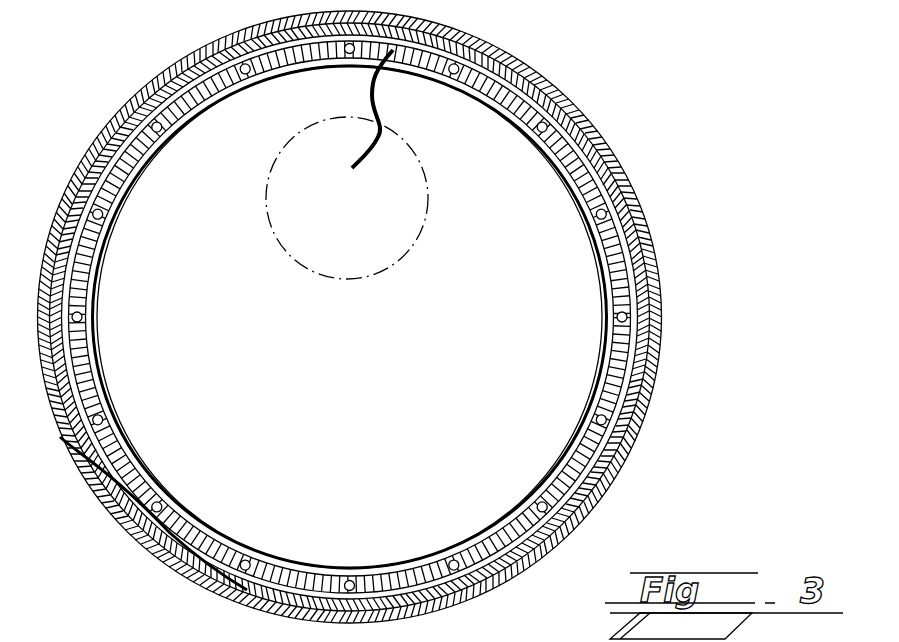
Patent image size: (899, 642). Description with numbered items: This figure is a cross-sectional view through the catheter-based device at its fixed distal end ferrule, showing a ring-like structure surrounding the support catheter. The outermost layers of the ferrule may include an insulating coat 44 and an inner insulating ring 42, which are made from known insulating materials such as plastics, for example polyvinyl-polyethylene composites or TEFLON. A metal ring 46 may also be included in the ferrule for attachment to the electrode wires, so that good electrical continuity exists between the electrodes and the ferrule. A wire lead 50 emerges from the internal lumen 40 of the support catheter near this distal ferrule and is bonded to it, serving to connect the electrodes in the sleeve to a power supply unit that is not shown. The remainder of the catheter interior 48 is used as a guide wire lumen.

The internal lumen 40 is at (342, 278).
The inner insulating ring 42 is at (143, 470).
The insulating coat 44 is at (125, 505).
The metal ring 46 is at (123, 108).
The catheter interior 48 is at (372, 489).
The wire lead 50 is at (375, 112).